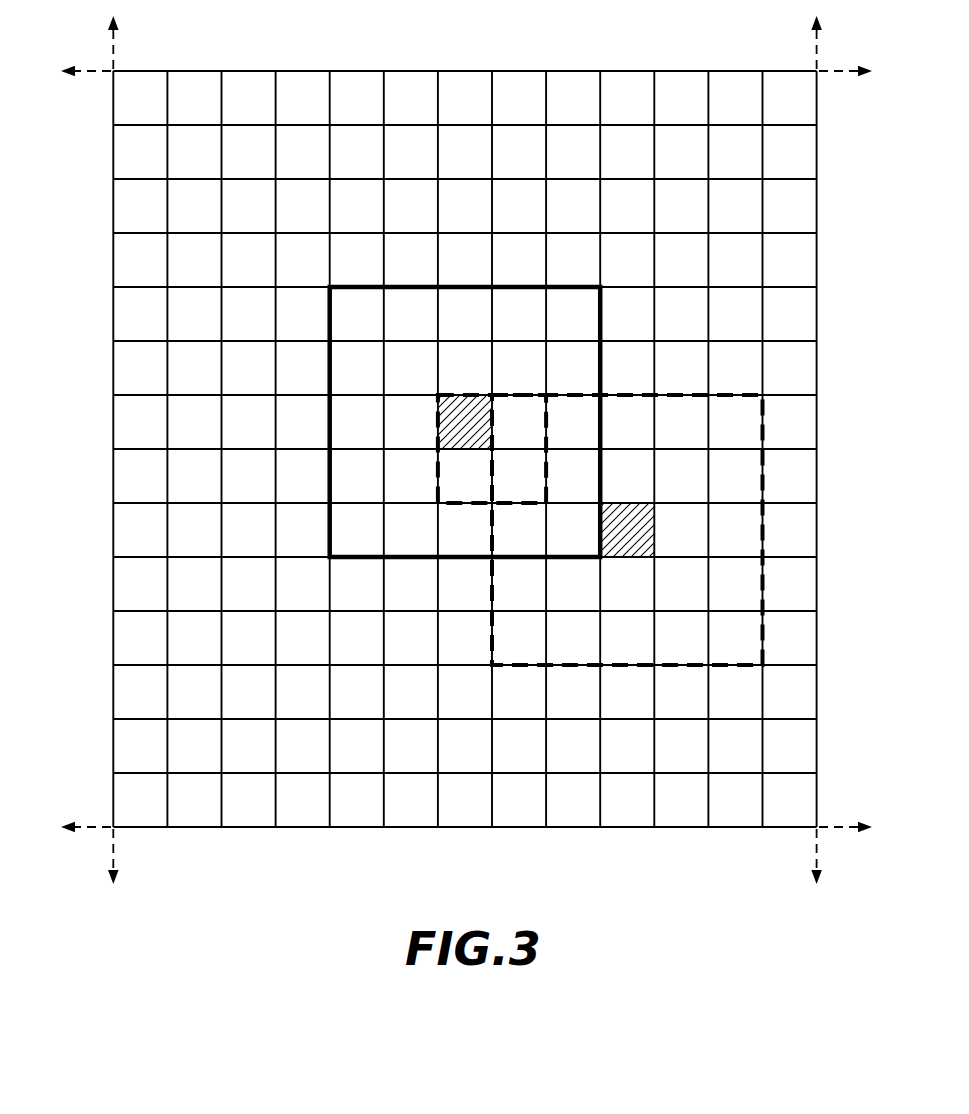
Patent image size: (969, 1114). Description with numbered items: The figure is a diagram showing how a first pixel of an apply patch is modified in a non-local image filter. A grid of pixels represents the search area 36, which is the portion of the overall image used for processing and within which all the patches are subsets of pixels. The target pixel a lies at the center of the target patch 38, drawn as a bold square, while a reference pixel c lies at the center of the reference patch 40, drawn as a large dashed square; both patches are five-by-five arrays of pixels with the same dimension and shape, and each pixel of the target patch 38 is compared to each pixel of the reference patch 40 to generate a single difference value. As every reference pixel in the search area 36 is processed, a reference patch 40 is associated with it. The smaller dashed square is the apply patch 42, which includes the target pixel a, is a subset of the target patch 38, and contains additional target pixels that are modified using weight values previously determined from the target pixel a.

The search area 36 is at (681, 827).
The target patch 38 is at (357, 557).
The reference patch 40 is at (643, 665).
The apply patch 42 is at (465, 503).